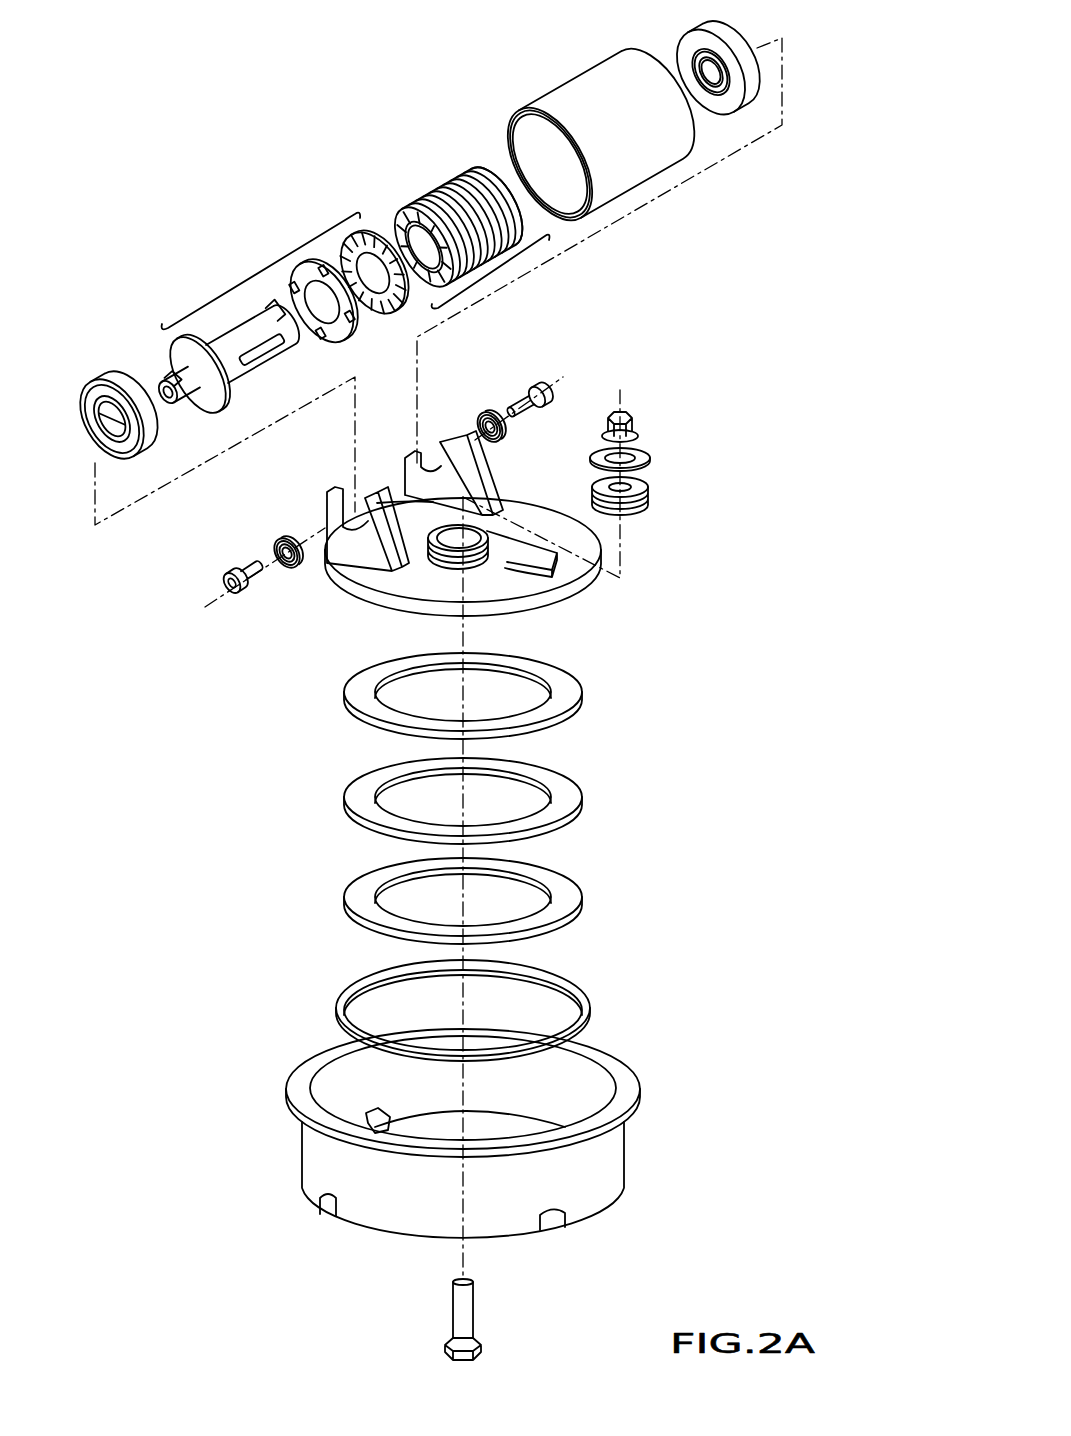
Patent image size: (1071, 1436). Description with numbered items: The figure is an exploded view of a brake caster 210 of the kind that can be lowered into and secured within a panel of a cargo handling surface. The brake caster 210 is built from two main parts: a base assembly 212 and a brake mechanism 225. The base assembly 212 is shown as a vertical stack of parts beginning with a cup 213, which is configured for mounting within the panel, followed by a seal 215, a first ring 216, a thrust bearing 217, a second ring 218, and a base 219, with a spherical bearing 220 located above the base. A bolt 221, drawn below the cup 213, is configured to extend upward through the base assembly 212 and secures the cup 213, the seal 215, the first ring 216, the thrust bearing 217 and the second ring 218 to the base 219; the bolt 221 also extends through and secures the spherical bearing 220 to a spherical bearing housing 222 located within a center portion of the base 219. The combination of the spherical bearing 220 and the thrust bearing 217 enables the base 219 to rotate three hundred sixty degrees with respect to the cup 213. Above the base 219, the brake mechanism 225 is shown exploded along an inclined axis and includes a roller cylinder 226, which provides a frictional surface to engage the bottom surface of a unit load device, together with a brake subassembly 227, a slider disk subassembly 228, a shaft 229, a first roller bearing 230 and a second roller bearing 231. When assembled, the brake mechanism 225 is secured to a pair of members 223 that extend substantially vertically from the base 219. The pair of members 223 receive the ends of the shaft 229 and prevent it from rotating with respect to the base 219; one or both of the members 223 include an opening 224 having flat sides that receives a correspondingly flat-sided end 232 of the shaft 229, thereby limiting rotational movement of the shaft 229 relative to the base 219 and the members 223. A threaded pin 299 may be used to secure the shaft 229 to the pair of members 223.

The brake caster 210 is at (234, 172).
The base assembly 212 is at (704, 750).
The cup 213 is at (615, 1148).
The seal 215 is at (590, 1007).
The first ring 216 is at (567, 893).
The thrust bearing 217 is at (360, 798).
The second ring 218 is at (568, 688).
The base 219 is at (340, 587).
The spherical bearing 220 is at (648, 495).
The bolt 221 is at (468, 1298).
The spherical bearing housing 222 is at (448, 572).
The pair of members 223 is at (332, 548).
The opening 224 is at (444, 436).
The brake mechanism 225 is at (360, 202).
The roller cylinder 226 is at (628, 175).
The brake subassembly 227 is at (490, 268).
The slider disk subassembly 228 is at (257, 269).
The shaft 229 is at (243, 366).
The first roller bearing 230 is at (728, 36).
The second roller bearing 231 is at (85, 397).
The end 232 is at (168, 378).
The threaded pin 299 is at (540, 388).